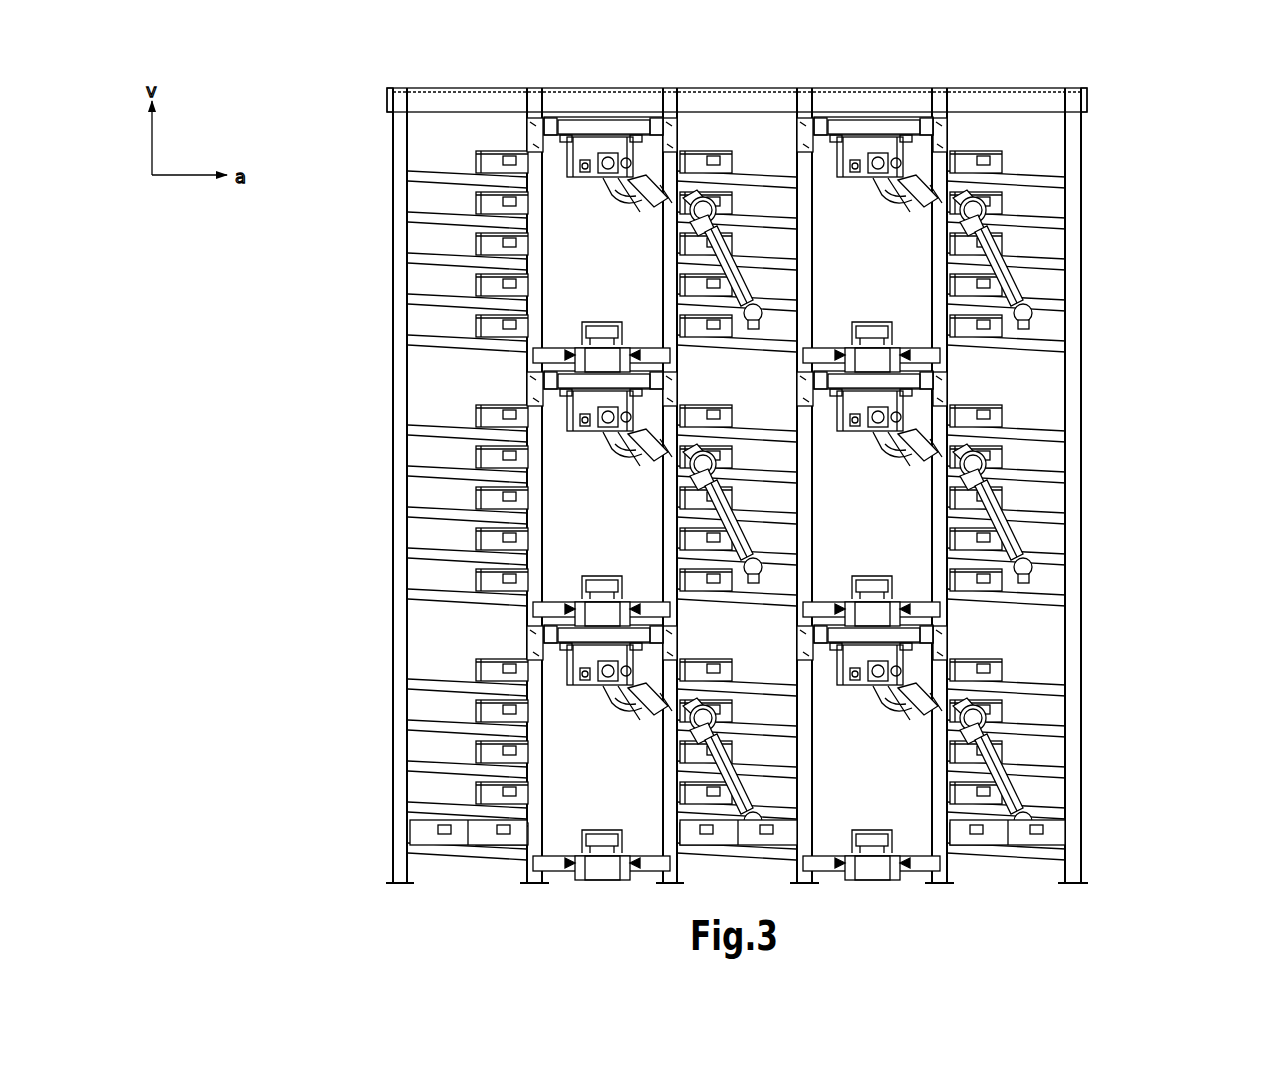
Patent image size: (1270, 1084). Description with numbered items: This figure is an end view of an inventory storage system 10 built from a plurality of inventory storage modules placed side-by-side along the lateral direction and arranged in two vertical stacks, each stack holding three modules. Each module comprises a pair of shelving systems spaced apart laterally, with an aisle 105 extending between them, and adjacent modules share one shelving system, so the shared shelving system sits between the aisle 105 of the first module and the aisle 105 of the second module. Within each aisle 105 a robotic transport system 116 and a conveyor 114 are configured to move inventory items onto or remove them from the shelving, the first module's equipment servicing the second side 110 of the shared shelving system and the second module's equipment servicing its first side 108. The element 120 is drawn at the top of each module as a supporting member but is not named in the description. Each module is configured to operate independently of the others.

The inventory storage system 10 is at (366, 82).
The aisle 105 is at (742, 463).
The first side 108 is at (545, 88).
The second side 110 is at (395, 87).
The conveyor 114 is at (590, 350).
The robotic transport system 116 is at (617, 205).
The top beam / carriage support 120 is at (597, 125).